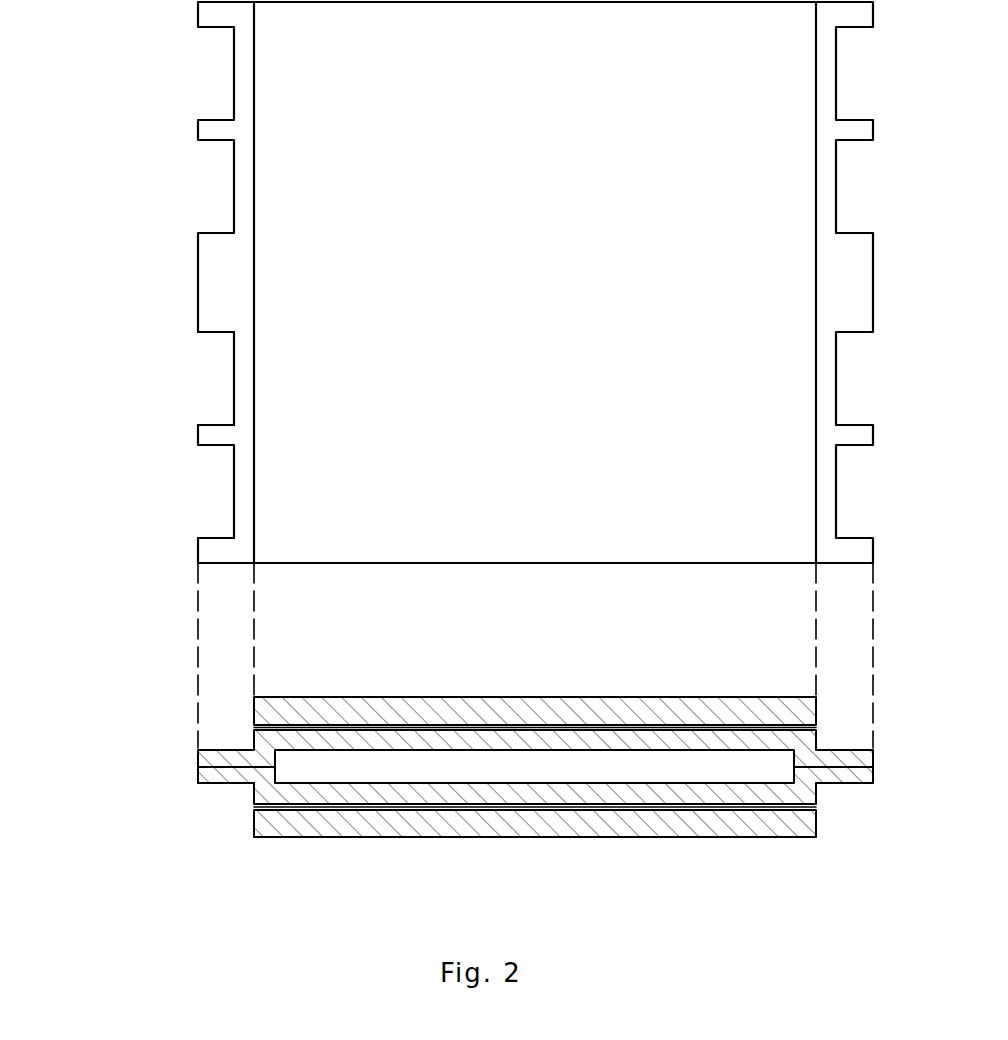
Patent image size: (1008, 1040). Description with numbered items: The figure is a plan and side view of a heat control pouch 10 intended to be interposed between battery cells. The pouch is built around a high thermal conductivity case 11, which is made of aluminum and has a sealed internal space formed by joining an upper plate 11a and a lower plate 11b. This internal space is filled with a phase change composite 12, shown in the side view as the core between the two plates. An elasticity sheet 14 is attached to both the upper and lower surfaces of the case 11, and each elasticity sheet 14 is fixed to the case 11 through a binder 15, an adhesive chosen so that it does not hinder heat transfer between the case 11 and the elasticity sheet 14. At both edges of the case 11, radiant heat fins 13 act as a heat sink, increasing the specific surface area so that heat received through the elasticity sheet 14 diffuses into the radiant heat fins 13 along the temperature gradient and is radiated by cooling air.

The heat control pouch 10 is at (190, 75).
The high thermal conductivity case 11 is at (212, 187).
The upper plate 11a is at (184, 758).
The lower plate 11b is at (184, 776).
The phase change composite 12 is at (683, 765).
The radiant heat fin 13 is at (215, 550).
The elasticity sheet 14 is at (277, 300).
The binder 15 is at (462, 810).